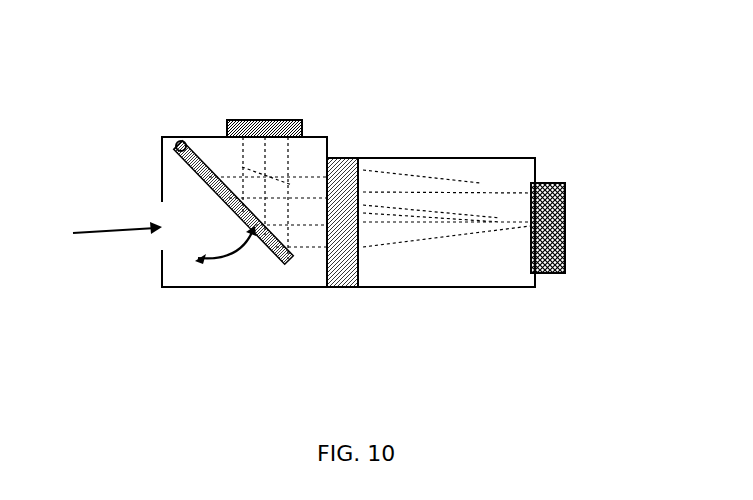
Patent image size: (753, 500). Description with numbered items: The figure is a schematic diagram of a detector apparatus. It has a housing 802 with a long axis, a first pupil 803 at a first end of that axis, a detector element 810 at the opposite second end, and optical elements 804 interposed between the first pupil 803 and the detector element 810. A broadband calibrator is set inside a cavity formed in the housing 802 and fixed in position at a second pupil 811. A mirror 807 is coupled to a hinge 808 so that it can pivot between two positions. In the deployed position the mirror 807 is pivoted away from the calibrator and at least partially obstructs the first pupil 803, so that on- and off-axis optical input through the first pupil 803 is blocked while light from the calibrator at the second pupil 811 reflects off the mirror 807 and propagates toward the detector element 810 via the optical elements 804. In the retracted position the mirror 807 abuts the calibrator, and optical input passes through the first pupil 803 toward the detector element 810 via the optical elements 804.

The housing 802 is at (222, 288).
The first pupil 803 is at (97, 235).
The optical elements 804 is at (343, 262).
The mirror 807 is at (222, 191).
The hinge 808 is at (176, 145).
The detector element 810 is at (563, 245).
The second pupil 811 is at (303, 137).